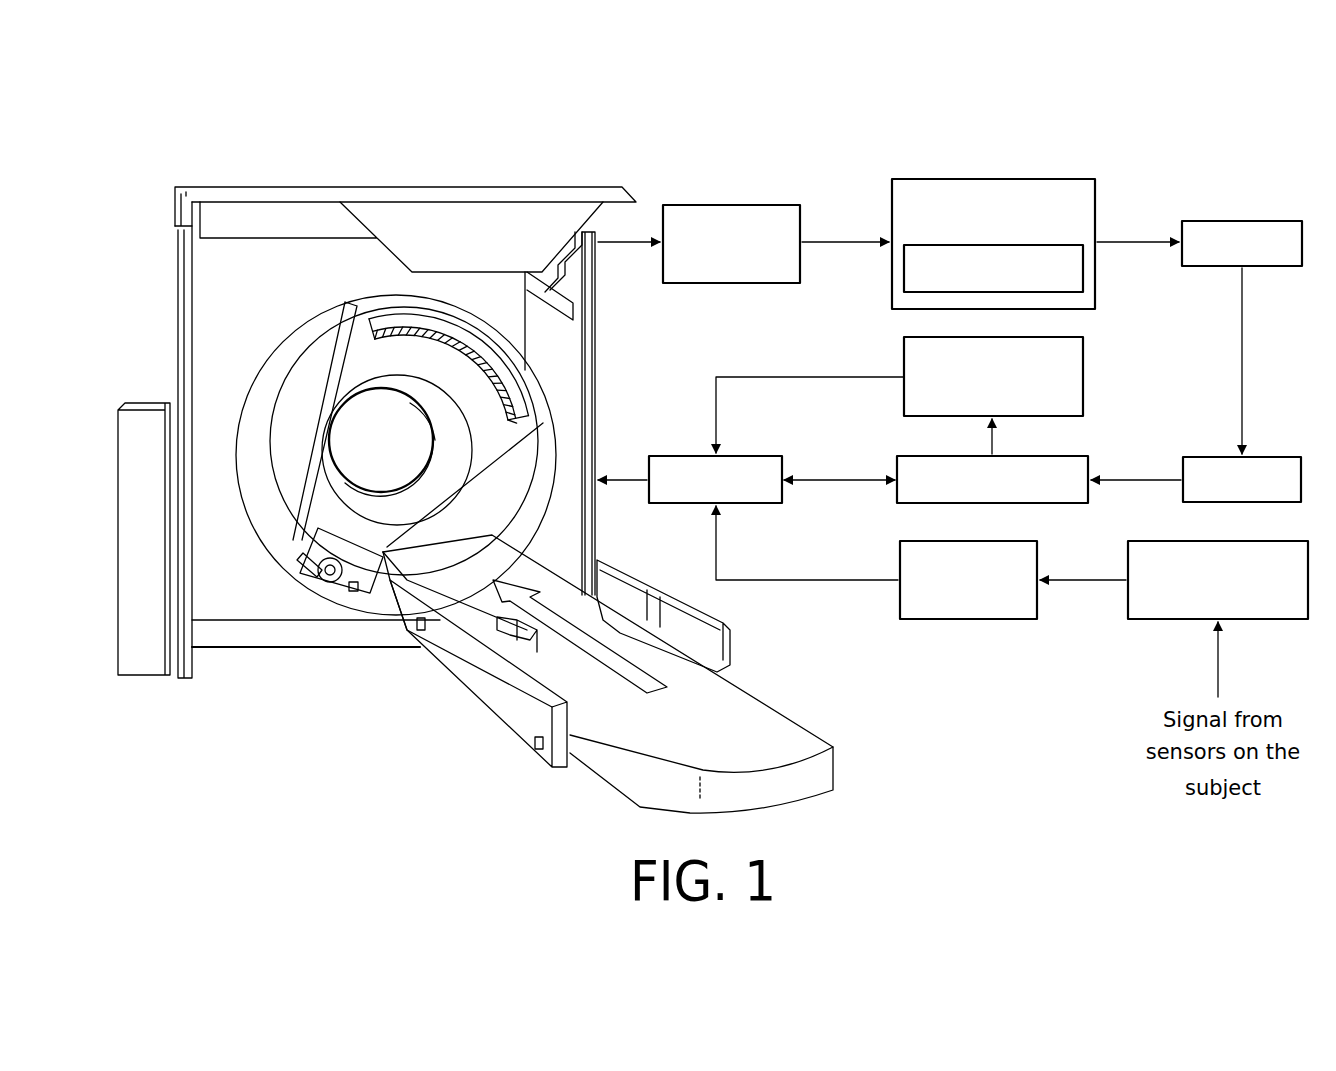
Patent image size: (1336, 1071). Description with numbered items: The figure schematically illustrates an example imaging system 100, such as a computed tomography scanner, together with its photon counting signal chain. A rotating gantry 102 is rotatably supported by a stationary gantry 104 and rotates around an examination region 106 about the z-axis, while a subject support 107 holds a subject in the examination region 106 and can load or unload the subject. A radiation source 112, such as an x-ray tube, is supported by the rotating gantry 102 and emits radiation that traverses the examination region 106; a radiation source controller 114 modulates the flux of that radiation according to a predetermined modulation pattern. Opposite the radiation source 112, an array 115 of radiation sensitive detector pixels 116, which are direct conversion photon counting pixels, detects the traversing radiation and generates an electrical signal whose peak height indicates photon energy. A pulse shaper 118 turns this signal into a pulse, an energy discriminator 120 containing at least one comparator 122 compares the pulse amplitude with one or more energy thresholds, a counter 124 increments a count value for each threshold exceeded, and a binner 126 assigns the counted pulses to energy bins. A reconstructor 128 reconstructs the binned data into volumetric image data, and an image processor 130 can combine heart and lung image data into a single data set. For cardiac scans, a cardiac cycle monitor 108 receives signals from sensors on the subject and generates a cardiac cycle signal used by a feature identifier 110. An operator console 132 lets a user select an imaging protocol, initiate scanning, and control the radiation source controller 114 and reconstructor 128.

The imaging system 100 is at (222, 137).
The rotating gantry 102 is at (353, 370).
The stationary gantry 104 is at (170, 235).
The examination region 106 is at (403, 449).
The subject support 107 is at (768, 742).
The cardiac cycle monitor 108 is at (1140, 604).
The feature identifier 110 is at (903, 553).
The radiation source 112 is at (330, 580).
The radiation source controller 114 is at (352, 595).
The array 115 is at (513, 370).
The detector pixels 116 is at (460, 360).
The pulse shaper 118 is at (733, 205).
The energy discriminator 120 is at (980, 179).
The comparator 122 is at (1082, 270).
The counter 124 is at (1240, 221).
The binner 126 is at (1290, 457).
The reconstructor 128 is at (1082, 465).
The image processor 130 is at (1085, 380).
The operator console 132 is at (770, 465).